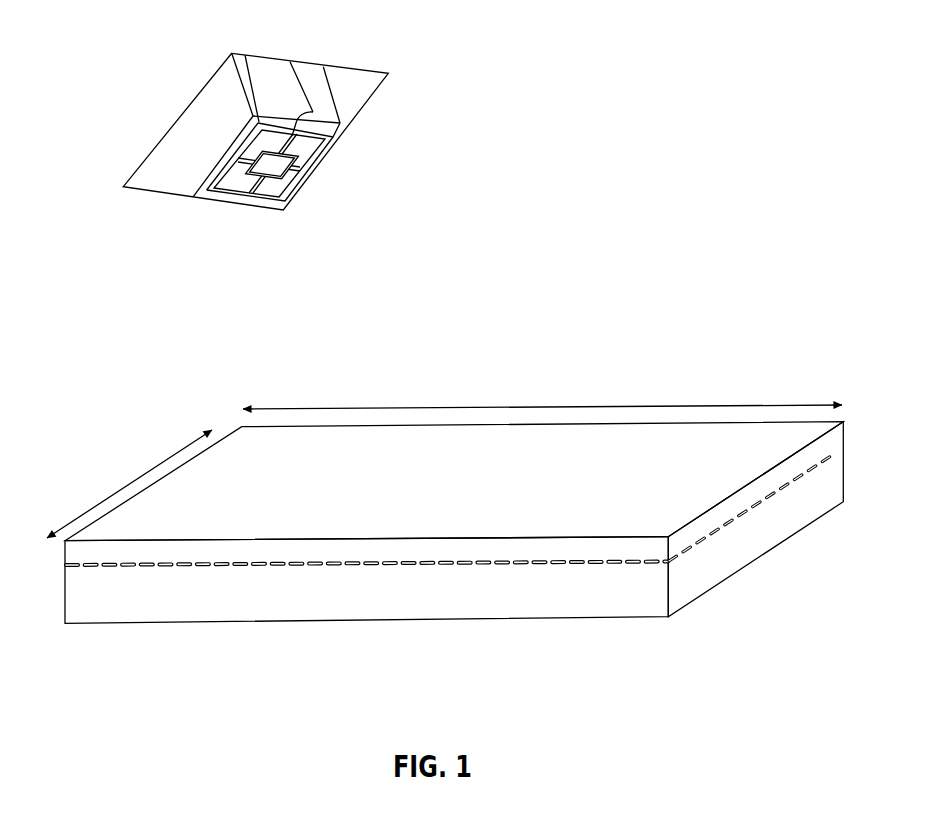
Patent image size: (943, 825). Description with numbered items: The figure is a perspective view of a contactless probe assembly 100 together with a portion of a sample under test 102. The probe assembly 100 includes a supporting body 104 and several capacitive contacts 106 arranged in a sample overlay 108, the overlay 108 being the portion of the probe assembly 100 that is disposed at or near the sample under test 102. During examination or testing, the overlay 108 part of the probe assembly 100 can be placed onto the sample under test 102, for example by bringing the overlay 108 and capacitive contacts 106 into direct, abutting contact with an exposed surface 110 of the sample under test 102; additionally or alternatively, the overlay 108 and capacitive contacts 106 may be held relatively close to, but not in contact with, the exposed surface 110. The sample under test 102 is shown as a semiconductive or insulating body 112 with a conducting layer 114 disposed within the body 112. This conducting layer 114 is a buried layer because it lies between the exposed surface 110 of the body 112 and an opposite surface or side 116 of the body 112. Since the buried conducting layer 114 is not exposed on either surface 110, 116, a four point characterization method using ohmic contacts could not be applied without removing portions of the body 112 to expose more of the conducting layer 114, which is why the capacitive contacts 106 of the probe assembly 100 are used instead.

The contactless probe assembly 100 is at (426, 62).
The sample under test 102 is at (235, 418).
The supporting body 104 is at (361, 82).
The capacitive contacts 106 is at (303, 153).
The sample overlay 108 is at (277, 218).
The exposed surface 110 is at (622, 473).
The semiconductive or insulating body 112 is at (768, 530).
The conducting layer 114 is at (834, 458).
The opposite surface or side 116 is at (540, 624).